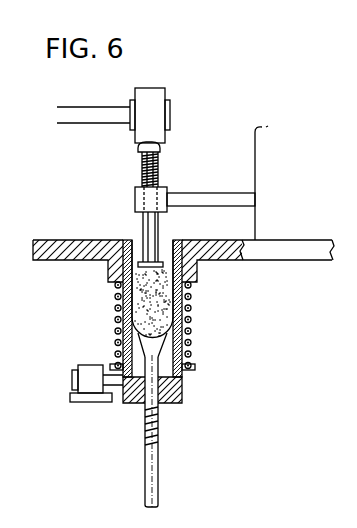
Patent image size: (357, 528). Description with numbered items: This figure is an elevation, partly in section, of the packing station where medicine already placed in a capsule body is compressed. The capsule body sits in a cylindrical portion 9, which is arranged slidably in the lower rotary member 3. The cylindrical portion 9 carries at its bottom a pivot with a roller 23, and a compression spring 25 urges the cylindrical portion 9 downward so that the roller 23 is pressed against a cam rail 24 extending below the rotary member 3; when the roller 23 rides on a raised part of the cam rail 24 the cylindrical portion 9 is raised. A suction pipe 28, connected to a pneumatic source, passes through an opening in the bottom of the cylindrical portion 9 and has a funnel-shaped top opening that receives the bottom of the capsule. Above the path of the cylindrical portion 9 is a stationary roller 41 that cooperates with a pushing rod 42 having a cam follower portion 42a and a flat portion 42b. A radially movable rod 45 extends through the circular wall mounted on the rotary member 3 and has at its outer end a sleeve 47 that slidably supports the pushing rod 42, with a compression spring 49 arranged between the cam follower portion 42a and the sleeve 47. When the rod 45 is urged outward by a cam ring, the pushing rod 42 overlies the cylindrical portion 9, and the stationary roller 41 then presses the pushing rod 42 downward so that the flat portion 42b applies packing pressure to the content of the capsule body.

The lower rotary member 3 is at (45, 240).
The stationary roller 41 is at (151, 89).
The pushing rod 42 is at (143, 167).
The cam follower portion 42a is at (146, 150).
The flat portion 42b is at (168, 242).
The compression spring 49 is at (158, 166).
The sleeve 47 is at (135, 200).
The rod 45 is at (233, 197).
The compression spring 25 is at (115, 296).
The roller 23 is at (78, 372).
The cam rail 24 is at (90, 398).
The cylindrical portion 9 is at (182, 390).
The suction pipe 28 is at (159, 465).